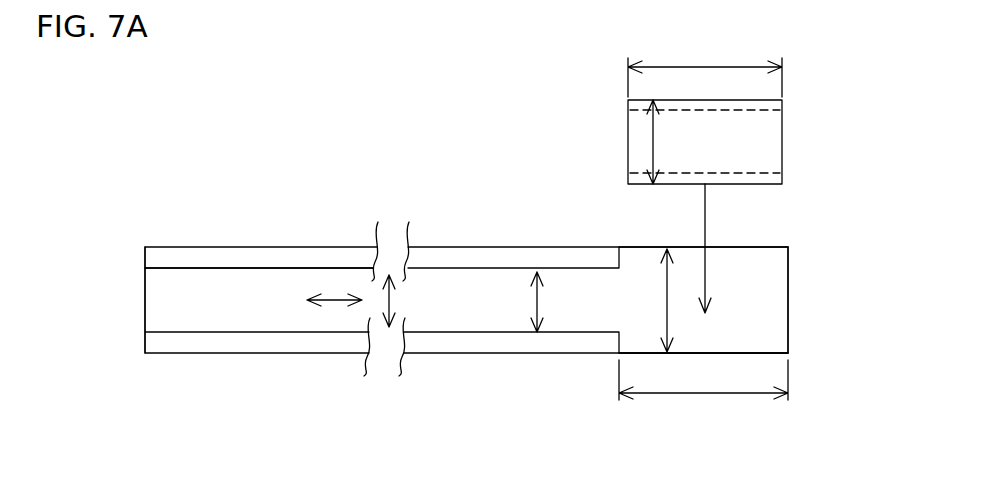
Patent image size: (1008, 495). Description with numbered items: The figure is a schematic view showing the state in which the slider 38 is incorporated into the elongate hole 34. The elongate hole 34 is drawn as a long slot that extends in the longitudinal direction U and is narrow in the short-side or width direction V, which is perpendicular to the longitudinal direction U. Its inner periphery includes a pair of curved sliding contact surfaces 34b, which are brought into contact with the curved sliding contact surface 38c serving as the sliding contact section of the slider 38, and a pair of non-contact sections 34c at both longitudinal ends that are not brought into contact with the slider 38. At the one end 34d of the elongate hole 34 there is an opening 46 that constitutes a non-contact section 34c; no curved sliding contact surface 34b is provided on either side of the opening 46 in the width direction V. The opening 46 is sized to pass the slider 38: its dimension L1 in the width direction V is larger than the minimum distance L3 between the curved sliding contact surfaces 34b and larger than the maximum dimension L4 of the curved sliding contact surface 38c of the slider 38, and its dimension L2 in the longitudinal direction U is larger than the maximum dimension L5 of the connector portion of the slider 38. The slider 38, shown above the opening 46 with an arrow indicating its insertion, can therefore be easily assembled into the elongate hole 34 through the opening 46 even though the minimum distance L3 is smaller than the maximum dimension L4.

The elongate hole 34 is at (487, 291).
The curved sliding contact surface 34b is at (261, 332).
The non-contact section 34c is at (155, 298).
The one end of the elongate hole 34d is at (770, 328).
The opening 46 is at (735, 285).
The slider 38 is at (797, 147).
The curved sliding contact surface 38c is at (752, 110).
The longitudinal direction U is at (335, 298).
The short-side direction V is at (396, 300).
The dimension of the opening in the width direction L1 is at (666, 300).
The dimension of the opening in the longitudinal direction L2 is at (682, 395).
The minimum distance between the curved sliding contact surfaces L3 is at (540, 306).
The maximum dimension of the curved sliding contact surface of the slider L4 is at (652, 140).
The maximum dimension of the connector L5 is at (704, 66).